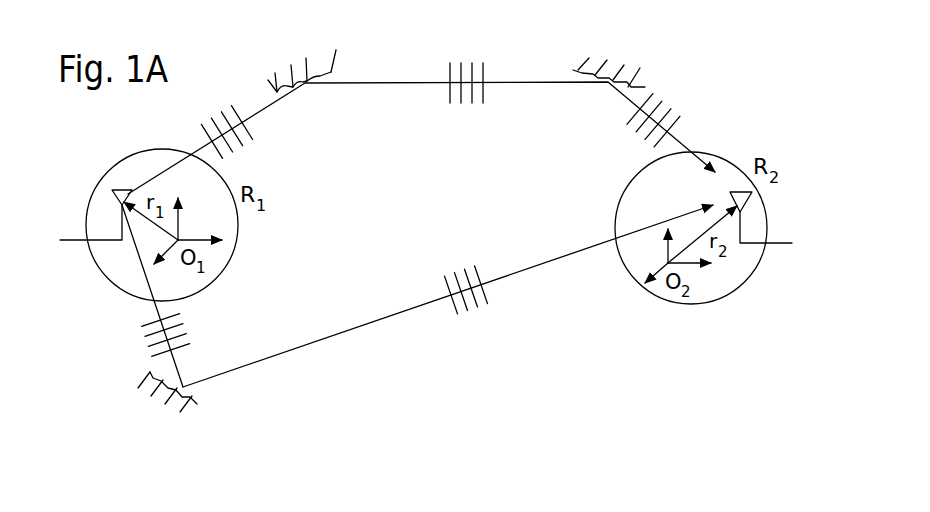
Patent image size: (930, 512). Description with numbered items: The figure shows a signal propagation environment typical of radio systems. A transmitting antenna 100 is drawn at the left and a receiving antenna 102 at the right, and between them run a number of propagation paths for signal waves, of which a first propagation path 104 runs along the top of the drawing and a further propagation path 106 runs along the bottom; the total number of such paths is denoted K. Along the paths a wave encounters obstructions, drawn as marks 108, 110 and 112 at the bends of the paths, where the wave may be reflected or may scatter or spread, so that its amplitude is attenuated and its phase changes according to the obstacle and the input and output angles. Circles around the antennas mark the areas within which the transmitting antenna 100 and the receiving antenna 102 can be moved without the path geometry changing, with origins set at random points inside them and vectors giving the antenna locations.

The transmitting antenna 100 is at (78, 245).
The receiving antenna 102 is at (774, 248).
The propagation path 104 is at (398, 85).
The propagation path 106 is at (305, 345).
The path segment 108 is at (268, 80).
The path segment 110 is at (645, 87).
The path segment 112 is at (200, 396).